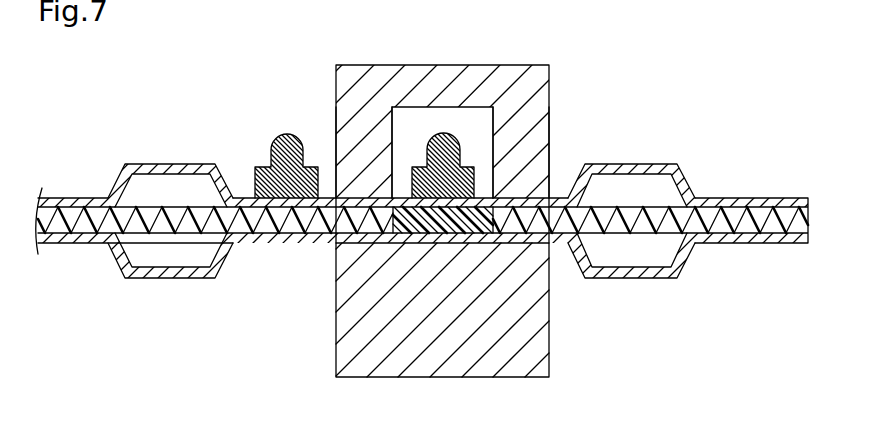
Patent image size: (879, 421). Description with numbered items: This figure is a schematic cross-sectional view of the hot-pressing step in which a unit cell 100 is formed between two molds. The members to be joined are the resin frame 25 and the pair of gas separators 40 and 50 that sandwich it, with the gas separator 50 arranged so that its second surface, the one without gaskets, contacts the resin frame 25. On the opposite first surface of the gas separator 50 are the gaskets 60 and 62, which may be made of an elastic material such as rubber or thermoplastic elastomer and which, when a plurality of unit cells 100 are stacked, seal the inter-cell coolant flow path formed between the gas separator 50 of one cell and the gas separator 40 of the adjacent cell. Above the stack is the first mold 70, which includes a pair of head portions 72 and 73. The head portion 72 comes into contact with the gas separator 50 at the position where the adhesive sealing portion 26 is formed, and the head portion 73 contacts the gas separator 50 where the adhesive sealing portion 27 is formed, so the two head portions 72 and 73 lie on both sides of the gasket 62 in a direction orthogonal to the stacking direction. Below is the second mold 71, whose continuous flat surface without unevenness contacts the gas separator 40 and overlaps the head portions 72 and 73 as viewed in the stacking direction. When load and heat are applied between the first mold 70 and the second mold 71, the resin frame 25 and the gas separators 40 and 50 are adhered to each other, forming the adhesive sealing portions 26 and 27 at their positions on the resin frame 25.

The unit cell 100 is at (714, 87).
The resin frame 25 is at (767, 198).
The adhesive sealing portion 26 is at (365, 224).
The adhesive sealing portion 27 is at (520, 226).
The gas separator 40 is at (684, 262).
The gas separator 50 is at (687, 178).
The gasket 60 is at (283, 132).
The gasket 62 is at (424, 157).
The first mold 70 is at (533, 82).
The second mold 71 is at (538, 358).
The head portion 72 is at (348, 180).
The head portion 73 is at (543, 186).